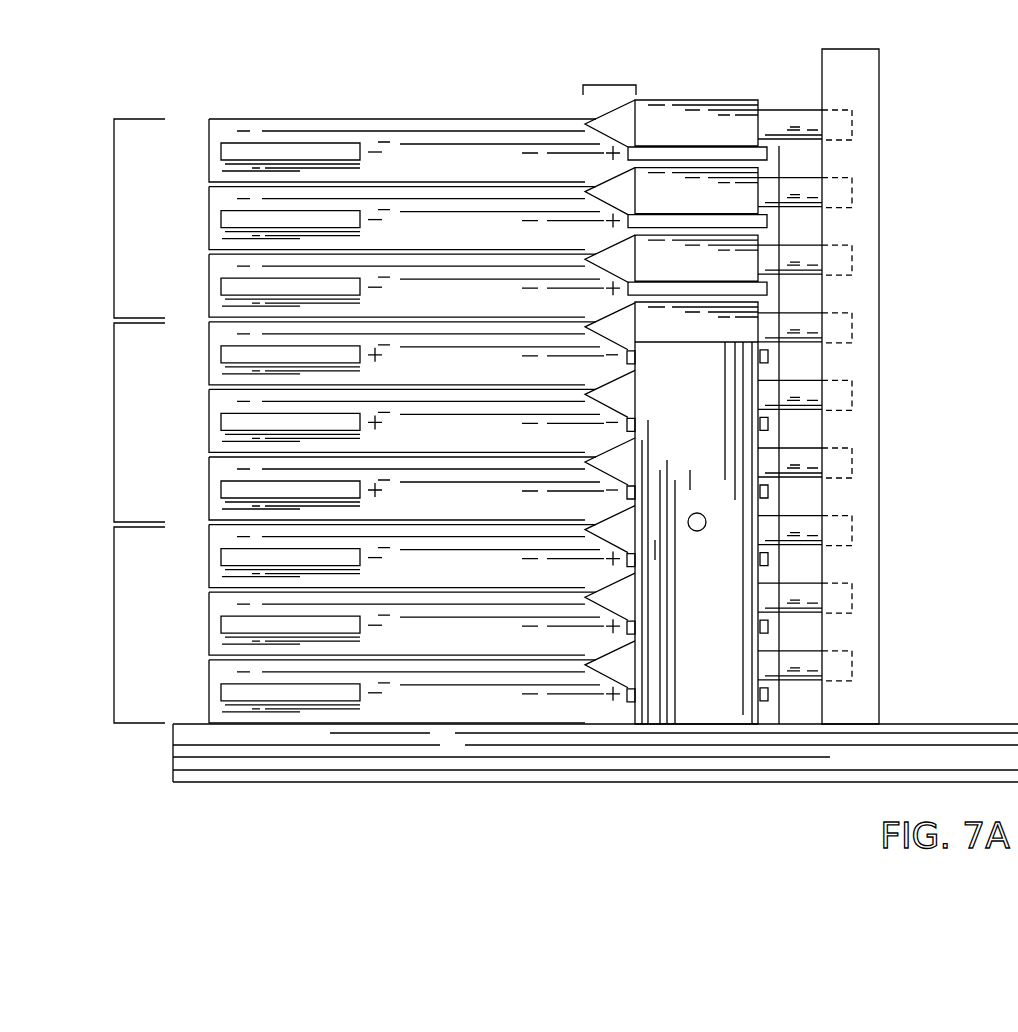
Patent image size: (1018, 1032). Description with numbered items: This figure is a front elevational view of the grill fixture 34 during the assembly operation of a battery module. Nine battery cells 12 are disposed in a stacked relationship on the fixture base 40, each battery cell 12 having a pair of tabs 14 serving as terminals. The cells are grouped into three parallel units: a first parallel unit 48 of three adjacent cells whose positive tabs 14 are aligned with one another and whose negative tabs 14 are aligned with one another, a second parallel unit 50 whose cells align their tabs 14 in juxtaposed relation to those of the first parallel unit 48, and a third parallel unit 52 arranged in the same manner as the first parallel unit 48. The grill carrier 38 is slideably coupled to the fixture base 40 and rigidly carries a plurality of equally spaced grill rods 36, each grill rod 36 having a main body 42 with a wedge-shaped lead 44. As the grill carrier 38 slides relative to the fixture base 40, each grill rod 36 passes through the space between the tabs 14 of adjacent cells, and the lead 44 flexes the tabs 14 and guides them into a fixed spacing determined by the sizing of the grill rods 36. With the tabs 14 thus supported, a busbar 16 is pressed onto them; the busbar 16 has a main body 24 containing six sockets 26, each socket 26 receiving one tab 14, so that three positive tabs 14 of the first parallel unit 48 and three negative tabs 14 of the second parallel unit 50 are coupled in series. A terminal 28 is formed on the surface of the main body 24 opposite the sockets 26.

The battery cell 12 is at (386, 421).
The tab 14 is at (607, 287).
The busbar 16 is at (726, 500).
The main body 24 is at (693, 608).
The socket 26 is at (789, 525).
The terminal 28 is at (697, 512).
The grill fixture 34 is at (595, 392).
The grill rod 36 is at (702, 164).
The grill carrier 38 is at (879, 49).
The fixture base 40 is at (968, 724).
The main body 42 is at (678, 97).
The wedge-shaped lead 44 is at (610, 84).
The first parallel unit 48 is at (114, 633).
The second parallel unit 50 is at (114, 430).
The third parallel unit 52 is at (114, 226).